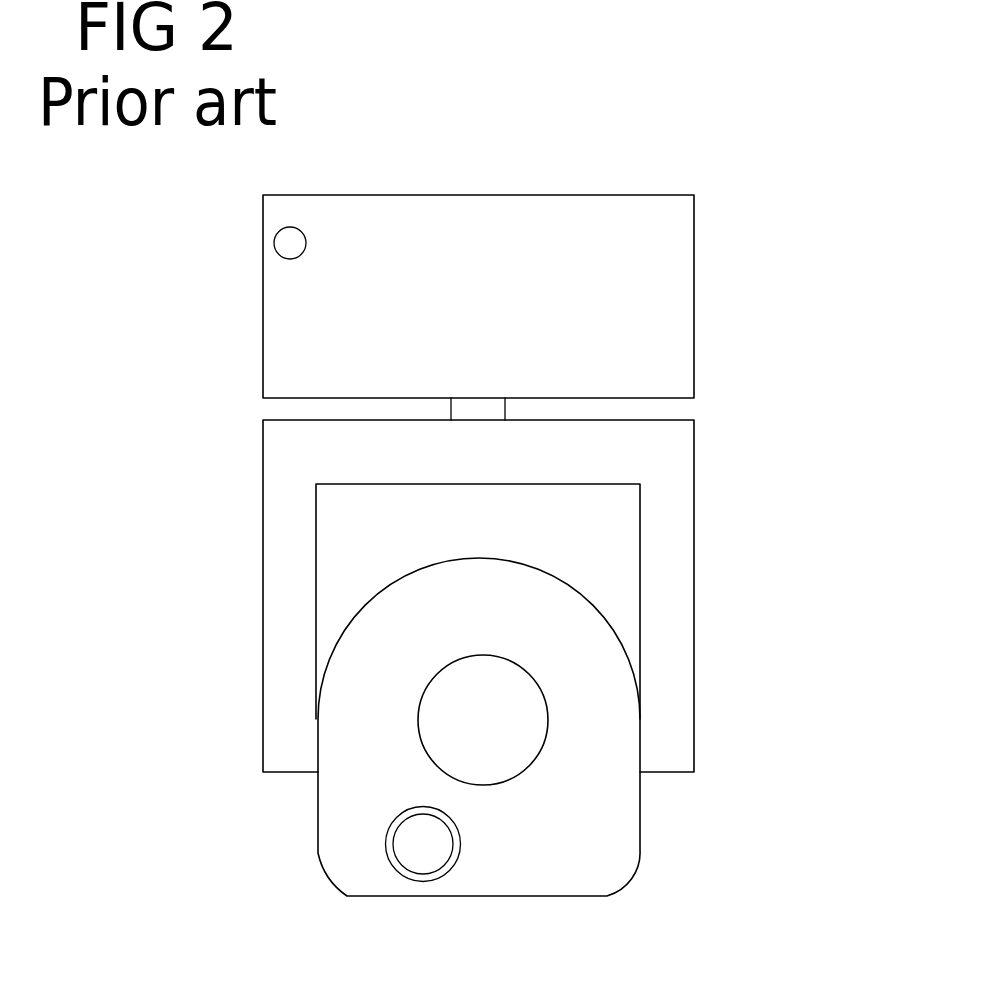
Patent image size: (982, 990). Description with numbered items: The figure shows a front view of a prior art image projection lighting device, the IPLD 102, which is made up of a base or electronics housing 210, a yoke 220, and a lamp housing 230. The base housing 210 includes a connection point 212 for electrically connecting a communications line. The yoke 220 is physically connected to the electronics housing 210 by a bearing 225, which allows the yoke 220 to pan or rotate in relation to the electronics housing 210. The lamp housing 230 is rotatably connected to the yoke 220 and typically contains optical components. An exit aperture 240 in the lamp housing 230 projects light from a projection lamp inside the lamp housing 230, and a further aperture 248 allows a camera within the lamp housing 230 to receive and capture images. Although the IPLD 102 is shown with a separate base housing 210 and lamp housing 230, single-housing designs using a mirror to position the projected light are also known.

The IPLD 102 is at (678, 118).
The base housing 210 is at (250, 349).
The connection point 212 is at (274, 242).
The yoke 220 is at (240, 610).
The bearing 225 is at (480, 402).
The lamp housing 230 is at (600, 593).
The exit aperture 240 is at (570, 729).
The aperture 248 is at (375, 863).